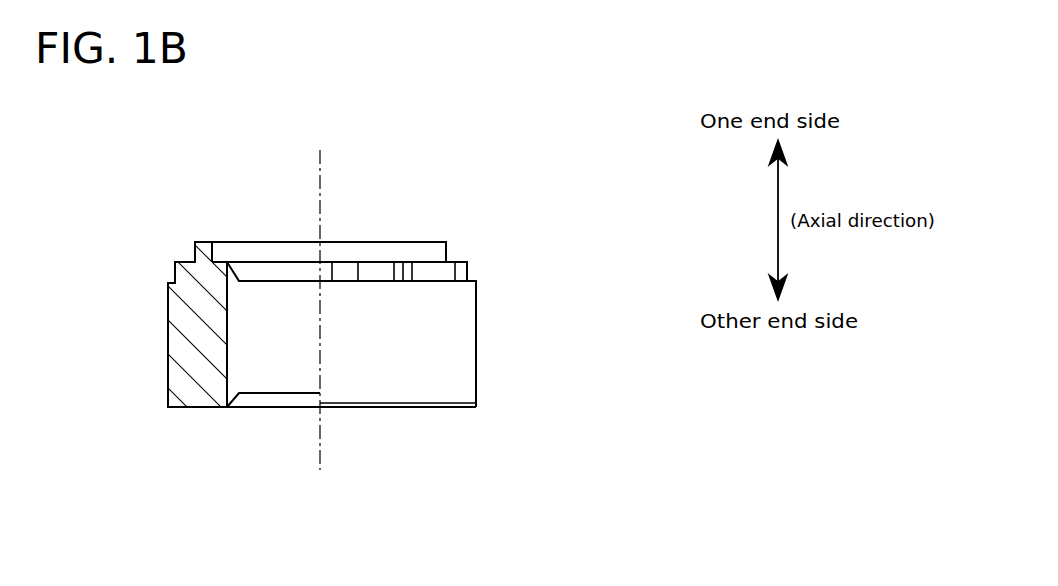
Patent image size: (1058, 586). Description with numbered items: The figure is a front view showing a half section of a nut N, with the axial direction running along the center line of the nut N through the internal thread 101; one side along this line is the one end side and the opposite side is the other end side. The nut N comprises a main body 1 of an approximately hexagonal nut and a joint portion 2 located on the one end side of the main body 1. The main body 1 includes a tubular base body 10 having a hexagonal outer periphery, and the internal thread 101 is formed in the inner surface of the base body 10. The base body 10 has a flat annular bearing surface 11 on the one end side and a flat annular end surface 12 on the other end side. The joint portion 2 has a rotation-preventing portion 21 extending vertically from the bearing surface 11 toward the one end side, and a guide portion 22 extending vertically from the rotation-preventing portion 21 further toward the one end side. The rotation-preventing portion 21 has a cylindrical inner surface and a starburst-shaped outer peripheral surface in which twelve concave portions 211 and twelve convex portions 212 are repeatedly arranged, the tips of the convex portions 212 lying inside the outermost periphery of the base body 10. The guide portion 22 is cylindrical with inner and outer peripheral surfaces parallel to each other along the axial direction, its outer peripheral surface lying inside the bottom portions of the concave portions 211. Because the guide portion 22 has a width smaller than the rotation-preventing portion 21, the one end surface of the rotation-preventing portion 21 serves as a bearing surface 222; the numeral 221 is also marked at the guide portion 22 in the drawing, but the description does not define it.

The nut N is at (343, 354).
The main body 1 is at (247, 337).
The base body 10 is at (173, 338).
The bearing surface 11 is at (170, 283).
The internal thread 101 is at (230, 373).
The end surface 12 is at (274, 438).
The joint portion 2 is at (397, 232).
The rotation-preventing portion 21 is at (471, 269).
The concave portions 211 is at (430, 272).
The convex portions 212 is at (463, 270).
The guide portion 22 is at (375, 209).
The outer end portion 221 is at (200, 242).
The bearing surface 222 is at (193, 262).